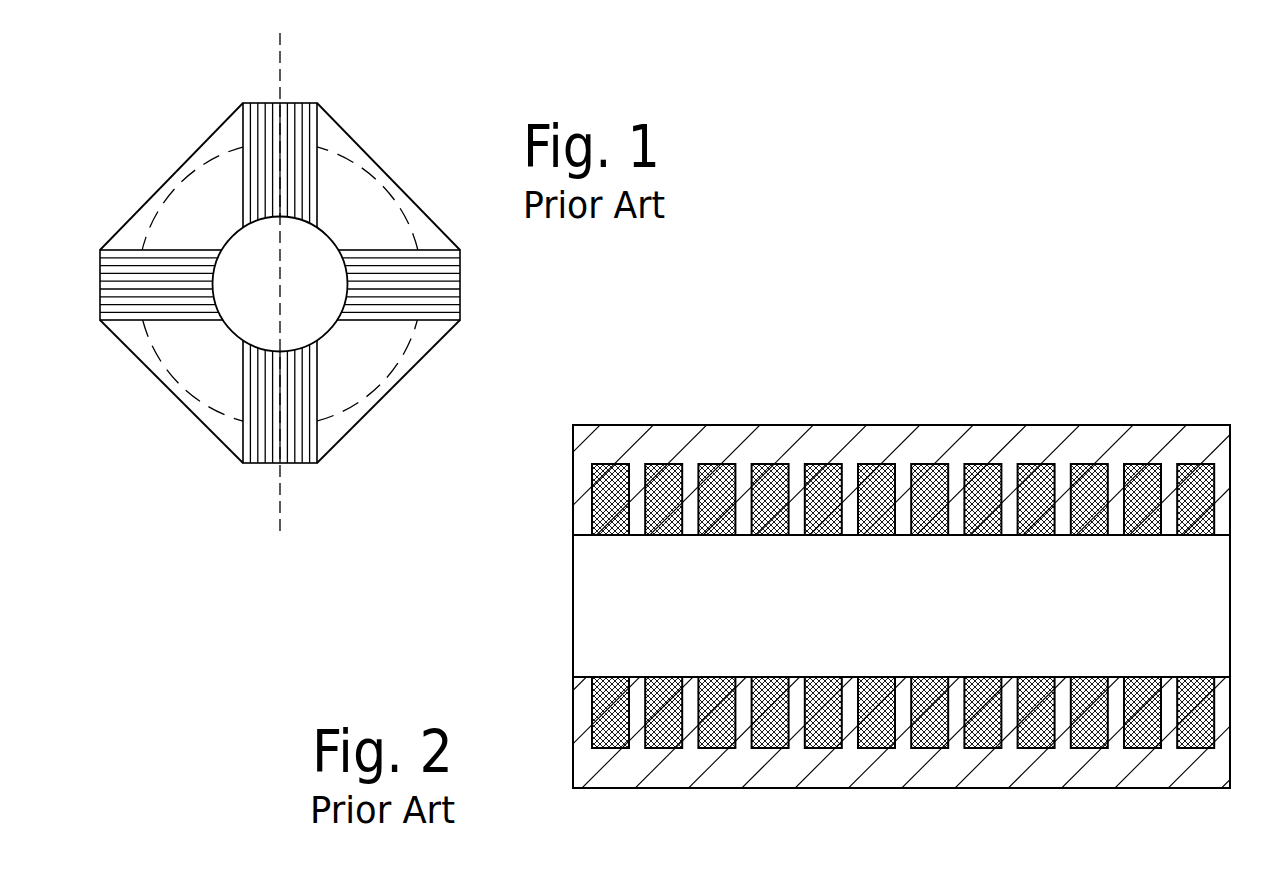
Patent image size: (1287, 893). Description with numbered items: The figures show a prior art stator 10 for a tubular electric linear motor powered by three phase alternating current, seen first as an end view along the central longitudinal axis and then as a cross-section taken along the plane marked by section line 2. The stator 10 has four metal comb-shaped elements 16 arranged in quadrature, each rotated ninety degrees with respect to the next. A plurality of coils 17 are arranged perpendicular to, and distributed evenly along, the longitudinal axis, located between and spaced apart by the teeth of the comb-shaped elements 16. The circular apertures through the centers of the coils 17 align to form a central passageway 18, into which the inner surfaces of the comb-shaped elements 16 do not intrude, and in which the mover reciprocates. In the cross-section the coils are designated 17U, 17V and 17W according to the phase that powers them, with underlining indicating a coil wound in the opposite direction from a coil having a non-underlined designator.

In FIG. 1, the section line 2- 2 is at (264, 33).
In FIG. 2, the stator 10 is at (930, 405).
In FIG. 1, the comb-shaped element 16 is at (245, 103).
In FIG. 2, the comb-shaped element 16 is at (866, 669).
In FIG. 1, the coil 17 is at (326, 372).
In FIG. 2, the coil powered by phase U 17U is at (610, 750).
In FIG. 2, the coil powered by phase V 17V is at (823, 750).
In FIG. 2, the coil powered by phase W 17W is at (717, 750).
In FIG. 1, the central passageway 18 is at (293, 323).
In FIG. 2, the central passageway 18 is at (680, 606).